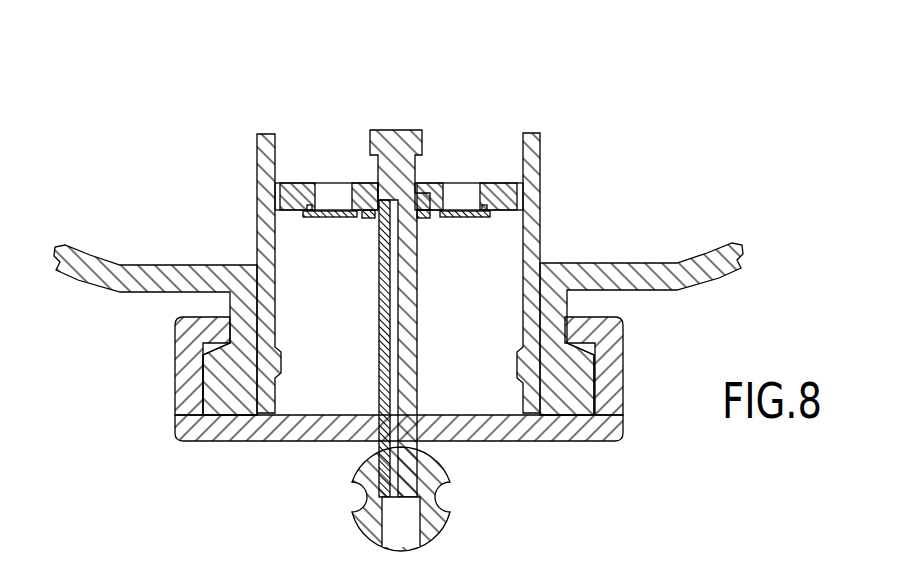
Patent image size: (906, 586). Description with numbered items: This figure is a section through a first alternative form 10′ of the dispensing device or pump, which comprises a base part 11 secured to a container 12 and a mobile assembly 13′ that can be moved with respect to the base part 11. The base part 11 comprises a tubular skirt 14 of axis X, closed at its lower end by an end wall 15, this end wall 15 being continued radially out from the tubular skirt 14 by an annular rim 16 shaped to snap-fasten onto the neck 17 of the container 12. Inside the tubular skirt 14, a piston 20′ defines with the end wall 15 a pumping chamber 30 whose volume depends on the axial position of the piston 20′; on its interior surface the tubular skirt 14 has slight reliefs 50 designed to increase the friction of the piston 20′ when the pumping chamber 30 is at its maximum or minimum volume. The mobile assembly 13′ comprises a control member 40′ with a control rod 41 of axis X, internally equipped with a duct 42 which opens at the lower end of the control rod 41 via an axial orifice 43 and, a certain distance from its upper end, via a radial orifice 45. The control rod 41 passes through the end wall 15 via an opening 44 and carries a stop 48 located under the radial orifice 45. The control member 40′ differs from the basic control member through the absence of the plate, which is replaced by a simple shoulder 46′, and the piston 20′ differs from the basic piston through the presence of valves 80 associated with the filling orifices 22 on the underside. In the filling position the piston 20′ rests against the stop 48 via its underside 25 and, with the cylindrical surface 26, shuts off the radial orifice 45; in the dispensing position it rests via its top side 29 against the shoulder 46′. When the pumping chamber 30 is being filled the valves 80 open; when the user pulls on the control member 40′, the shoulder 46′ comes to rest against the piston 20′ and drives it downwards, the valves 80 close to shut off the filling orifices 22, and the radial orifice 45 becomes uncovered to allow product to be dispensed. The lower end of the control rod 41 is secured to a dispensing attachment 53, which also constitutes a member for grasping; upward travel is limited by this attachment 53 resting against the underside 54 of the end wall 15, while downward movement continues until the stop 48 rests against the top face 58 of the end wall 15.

The first alternative form 10′ is at (250, 137).
The base part 11 is at (540, 134).
The container 12 is at (102, 275).
The mobile assembly 13′ is at (326, 122).
The tubular skirt 14 is at (524, 322).
The end wall 15 is at (339, 427).
The annular rim 16 is at (193, 403).
The neck 17 is at (220, 385).
The piston 20′ is at (292, 220).
The filling orifices 22 is at (350, 194).
The underside 25 is at (277, 203).
The cylindrical surface 26 is at (426, 190).
The top side 29 is at (292, 183).
The pumping chamber 30 is at (480, 360).
The control member 40′ is at (378, 332).
The control rod 41 is at (419, 322).
The duct 42 is at (397, 376).
The axial orifice 43 is at (451, 529).
The opening 44 is at (420, 423).
The radial orifice 45 is at (418, 256).
The shoulder 46′ is at (372, 165).
The stop 48 is at (360, 218).
The slight reliefs 50 is at (540, 200).
The dispensing attachment 53 is at (357, 516).
The underside 54 is at (304, 442).
The top face 58 is at (477, 412).
The valves 80 is at (357, 216).